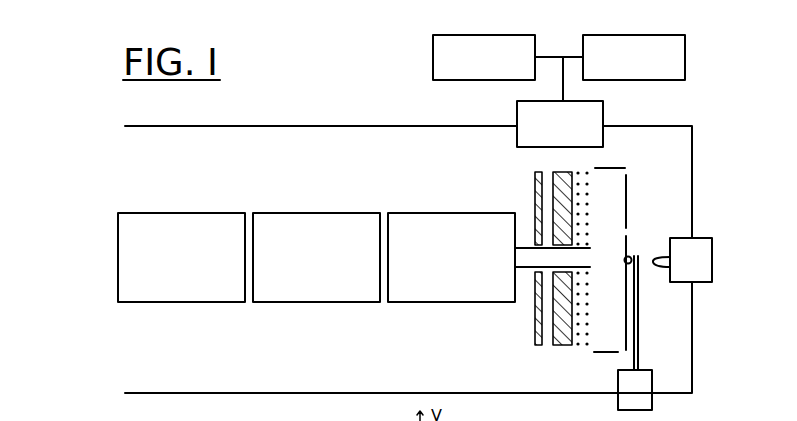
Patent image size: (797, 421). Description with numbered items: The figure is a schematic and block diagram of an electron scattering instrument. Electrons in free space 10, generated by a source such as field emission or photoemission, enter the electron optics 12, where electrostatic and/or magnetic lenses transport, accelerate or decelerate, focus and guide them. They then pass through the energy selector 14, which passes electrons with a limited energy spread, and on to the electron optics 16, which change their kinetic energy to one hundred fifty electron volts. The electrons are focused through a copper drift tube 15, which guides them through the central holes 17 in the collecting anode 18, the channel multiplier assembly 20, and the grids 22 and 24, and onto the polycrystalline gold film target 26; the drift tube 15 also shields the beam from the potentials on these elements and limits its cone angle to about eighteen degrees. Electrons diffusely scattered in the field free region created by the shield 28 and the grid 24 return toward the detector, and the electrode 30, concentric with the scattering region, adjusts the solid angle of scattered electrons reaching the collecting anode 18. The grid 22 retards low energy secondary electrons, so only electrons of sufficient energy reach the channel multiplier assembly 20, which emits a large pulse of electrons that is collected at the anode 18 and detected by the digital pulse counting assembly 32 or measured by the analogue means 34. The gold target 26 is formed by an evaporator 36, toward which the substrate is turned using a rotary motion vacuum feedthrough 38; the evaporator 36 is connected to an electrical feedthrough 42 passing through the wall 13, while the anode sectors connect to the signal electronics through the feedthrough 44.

The electrons in free space 10 is at (104, 253).
The electron optics 12 is at (174, 303).
The wall 13 is at (364, 125).
The energy selector 14 is at (310, 303).
The copper drift tube 15 is at (526, 245).
The electron optics 16 is at (447, 303).
The central holes 17 is at (520, 260).
The collecting anode 18 is at (534, 333).
The channel multiplier assembly 20 is at (558, 346).
The grid 22 is at (577, 350).
The grid 24 is at (587, 350).
The polycrystalline gold film target 26 is at (624, 258).
The shield 28 is at (627, 195).
The electrode 30 is at (609, 168).
The digital pulse counting assembly 32 is at (477, 34).
The analogue means 34 is at (635, 34).
The evaporator 36 is at (659, 262).
The rotary motion vacuum feedthrough 38 is at (640, 286).
The electrical feedthrough 42 is at (691, 260).
The feedthrough 44 is at (560, 124).